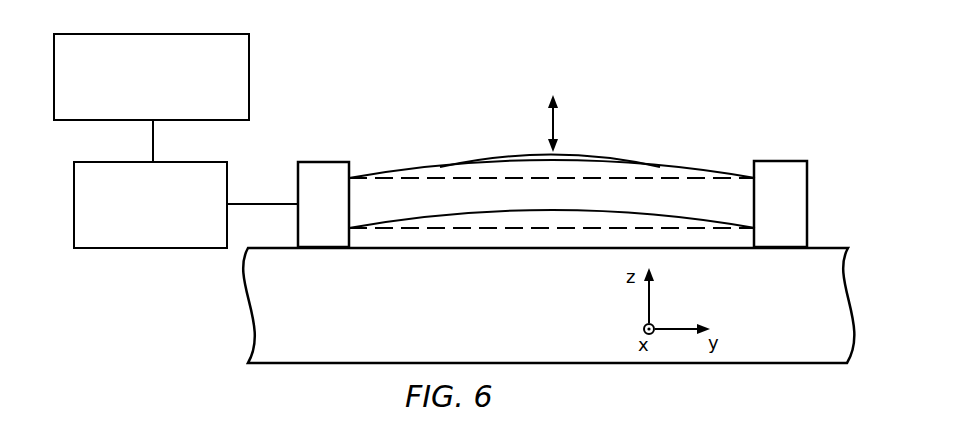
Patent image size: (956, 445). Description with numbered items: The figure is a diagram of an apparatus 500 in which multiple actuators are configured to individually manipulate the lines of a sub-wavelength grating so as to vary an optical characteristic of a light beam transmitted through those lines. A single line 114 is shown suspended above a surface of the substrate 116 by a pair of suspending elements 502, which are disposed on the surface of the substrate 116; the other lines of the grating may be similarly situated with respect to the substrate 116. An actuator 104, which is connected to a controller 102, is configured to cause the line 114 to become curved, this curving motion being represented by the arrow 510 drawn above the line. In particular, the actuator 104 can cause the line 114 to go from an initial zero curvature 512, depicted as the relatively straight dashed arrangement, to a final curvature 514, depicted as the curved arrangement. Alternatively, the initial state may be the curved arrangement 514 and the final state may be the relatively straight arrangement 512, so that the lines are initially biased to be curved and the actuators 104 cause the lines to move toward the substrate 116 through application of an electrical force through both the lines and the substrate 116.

The controller 102 is at (134, 102).
The actuator 104 is at (133, 228).
The apparatus 500 is at (744, 86).
The suspending elements 502 is at (317, 162).
The line 114 is at (422, 163).
The final curvature 514 is at (488, 161).
The initial zero curvature 512 is at (435, 230).
The arrow 510 is at (553, 129).
The substrate 116 is at (518, 326).